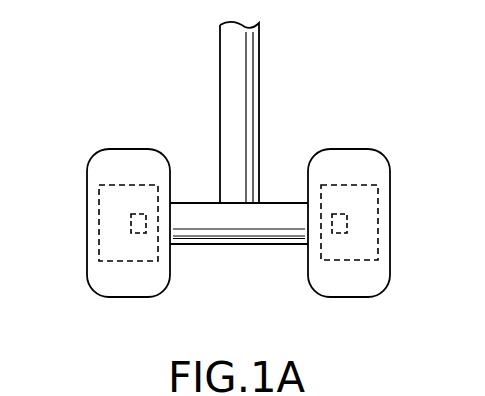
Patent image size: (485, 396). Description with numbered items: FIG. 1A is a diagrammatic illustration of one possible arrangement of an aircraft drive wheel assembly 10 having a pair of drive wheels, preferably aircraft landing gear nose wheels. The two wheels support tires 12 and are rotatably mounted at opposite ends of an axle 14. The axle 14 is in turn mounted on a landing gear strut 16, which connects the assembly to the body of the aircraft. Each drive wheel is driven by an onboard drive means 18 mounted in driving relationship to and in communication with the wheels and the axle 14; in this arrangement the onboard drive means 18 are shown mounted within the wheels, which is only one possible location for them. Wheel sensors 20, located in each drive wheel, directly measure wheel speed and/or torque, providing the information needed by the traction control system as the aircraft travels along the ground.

The aircraft drive wheel assembly 10 is at (150, 90).
The tires 12 is at (88, 222).
The axle 14 is at (213, 218).
The landing gear strut 16 is at (241, 105).
The onboard drive means 18 is at (128, 262).
The wheel sensors 20 is at (143, 234).